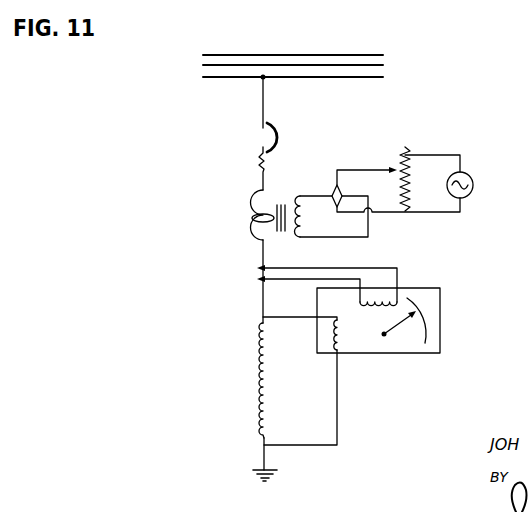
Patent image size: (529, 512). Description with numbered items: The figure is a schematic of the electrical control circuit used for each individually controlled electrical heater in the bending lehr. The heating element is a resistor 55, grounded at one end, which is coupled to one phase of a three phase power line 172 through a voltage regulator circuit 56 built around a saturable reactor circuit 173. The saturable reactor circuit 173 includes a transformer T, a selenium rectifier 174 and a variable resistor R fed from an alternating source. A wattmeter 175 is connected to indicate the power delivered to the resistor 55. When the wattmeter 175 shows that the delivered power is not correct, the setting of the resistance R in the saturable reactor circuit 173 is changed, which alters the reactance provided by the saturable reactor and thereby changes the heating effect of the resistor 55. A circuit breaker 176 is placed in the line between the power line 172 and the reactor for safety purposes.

The three phase power line 172 is at (197, 67).
The circuit breaker 176 is at (259, 138).
The saturable reactor circuit 173 is at (244, 219).
The selenium rectifier 174 is at (331, 191).
The voltage regulator circuit 56 is at (431, 246).
The wattmeter 175 is at (383, 353).
The resistor 55 is at (259, 383).